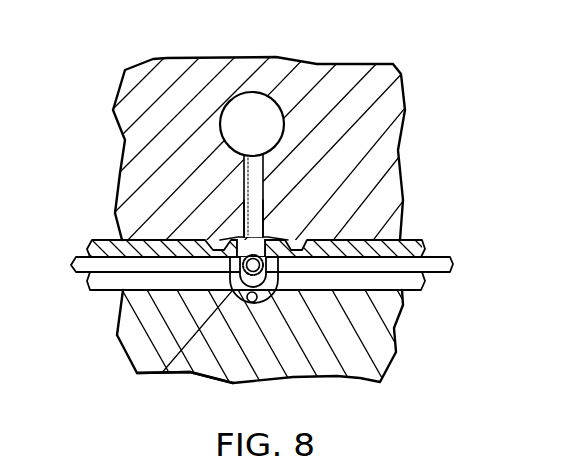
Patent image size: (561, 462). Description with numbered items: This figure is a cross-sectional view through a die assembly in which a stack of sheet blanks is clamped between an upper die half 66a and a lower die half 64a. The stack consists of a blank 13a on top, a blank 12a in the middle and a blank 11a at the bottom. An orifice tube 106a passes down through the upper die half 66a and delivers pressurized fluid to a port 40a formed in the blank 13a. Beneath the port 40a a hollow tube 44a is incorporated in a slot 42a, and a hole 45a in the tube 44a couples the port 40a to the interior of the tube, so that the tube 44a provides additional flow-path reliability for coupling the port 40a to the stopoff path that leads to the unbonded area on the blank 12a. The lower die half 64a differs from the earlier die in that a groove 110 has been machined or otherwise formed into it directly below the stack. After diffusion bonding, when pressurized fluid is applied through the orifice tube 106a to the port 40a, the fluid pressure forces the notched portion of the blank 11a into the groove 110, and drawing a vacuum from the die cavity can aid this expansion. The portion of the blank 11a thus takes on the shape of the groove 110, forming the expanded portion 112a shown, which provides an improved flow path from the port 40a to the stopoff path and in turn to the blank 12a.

The orifice tube 106a is at (274, 99).
The upper die half 66a is at (408, 116).
The lower die half 64a is at (380, 382).
The hole 45a is at (246, 233).
The port 40a is at (280, 237).
The blank 13a is at (428, 241).
The blank 12a is at (448, 263).
The blank 11a is at (425, 284).
The tube 44a is at (244, 272).
The slot 42a is at (265, 263).
The groove 110 is at (253, 302).
The expanded portion 112a is at (158, 372).